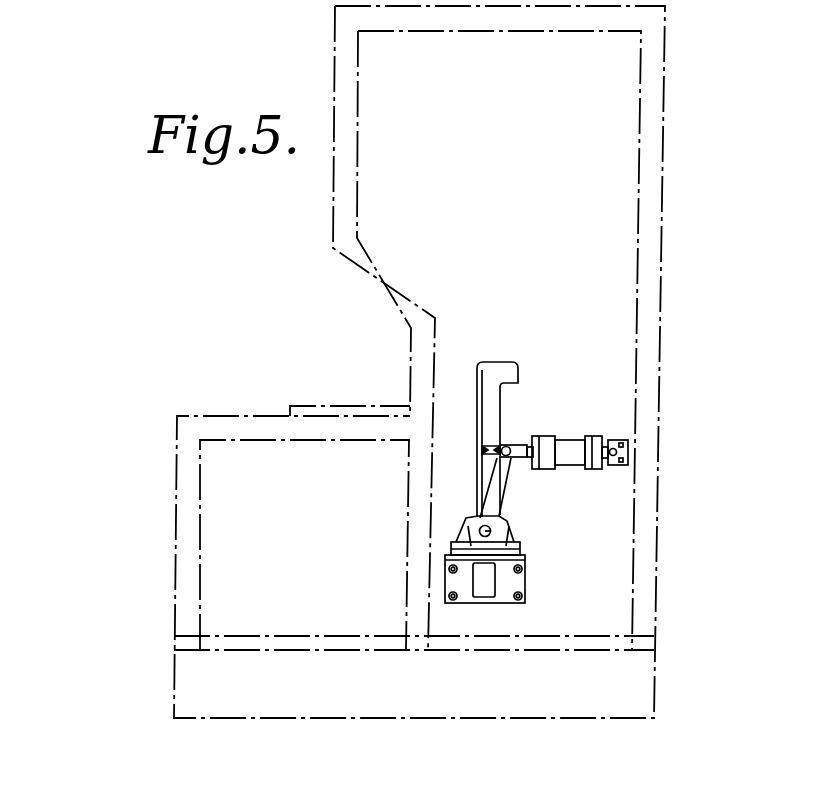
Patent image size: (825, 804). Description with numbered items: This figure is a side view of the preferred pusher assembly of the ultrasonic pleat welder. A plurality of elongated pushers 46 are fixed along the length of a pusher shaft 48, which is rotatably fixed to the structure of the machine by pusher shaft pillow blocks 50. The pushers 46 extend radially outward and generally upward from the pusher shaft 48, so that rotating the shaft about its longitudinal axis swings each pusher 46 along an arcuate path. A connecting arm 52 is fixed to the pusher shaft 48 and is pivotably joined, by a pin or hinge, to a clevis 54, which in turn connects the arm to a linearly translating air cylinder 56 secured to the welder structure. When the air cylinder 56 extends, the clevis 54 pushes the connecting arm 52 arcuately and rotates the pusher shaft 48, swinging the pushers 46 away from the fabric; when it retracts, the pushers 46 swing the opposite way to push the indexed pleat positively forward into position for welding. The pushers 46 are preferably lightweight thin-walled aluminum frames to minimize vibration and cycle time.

The pusher 46 is at (517, 378).
The pusher shaft 48 is at (502, 523).
The pusher shaft pillow block 50 is at (513, 538).
The connecting arm 52 is at (507, 488).
The clevis 54 is at (510, 446).
The air cylinder 56 is at (555, 437).